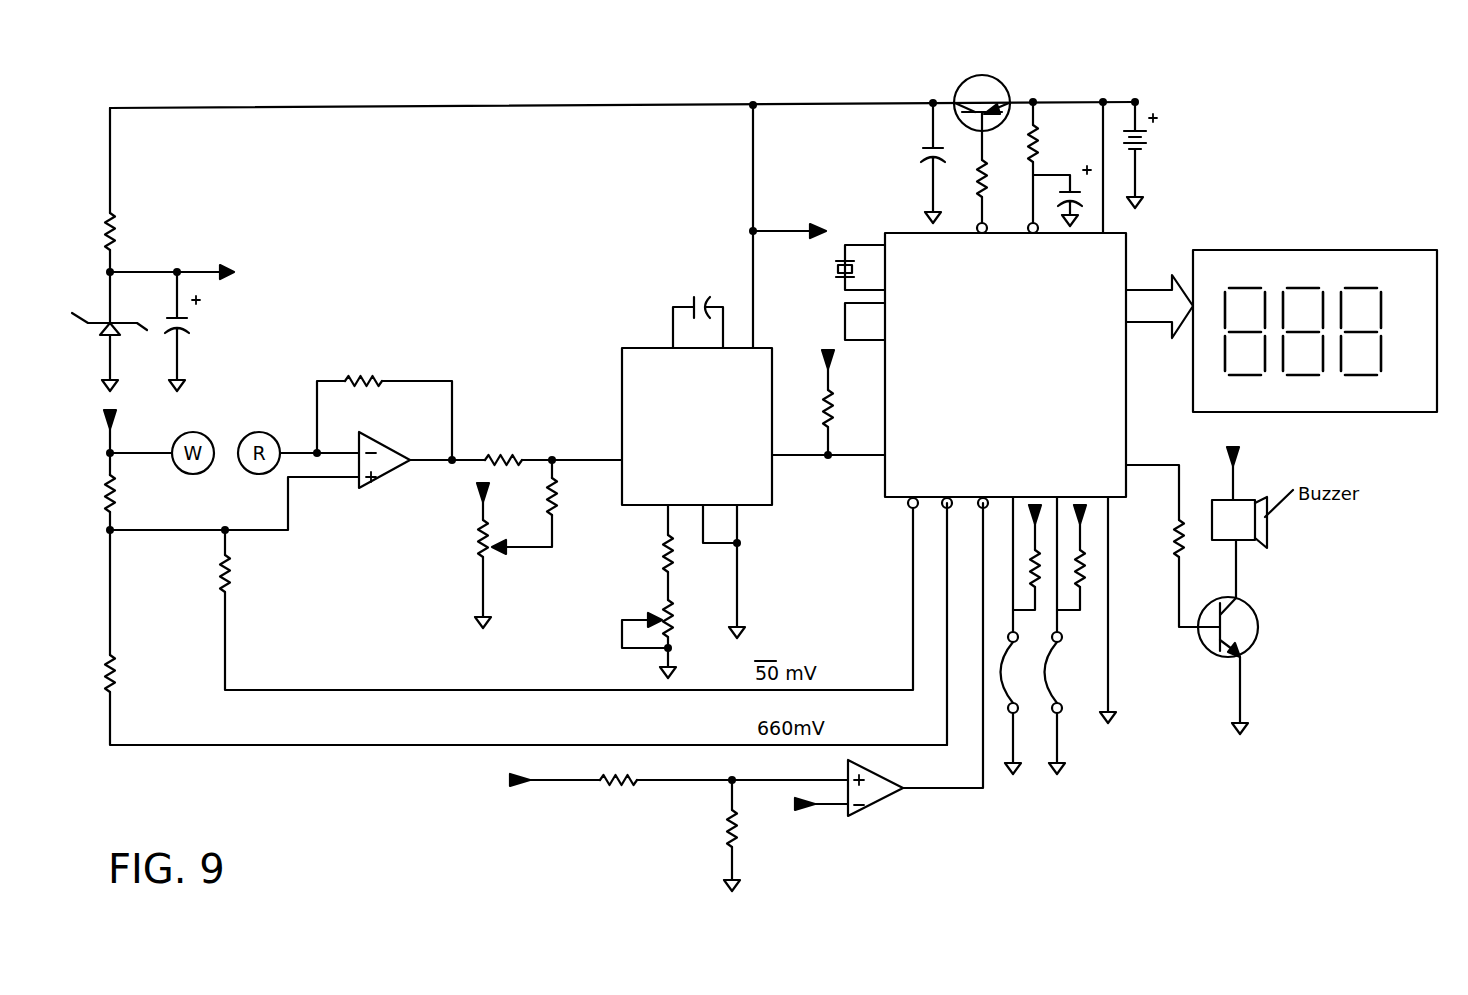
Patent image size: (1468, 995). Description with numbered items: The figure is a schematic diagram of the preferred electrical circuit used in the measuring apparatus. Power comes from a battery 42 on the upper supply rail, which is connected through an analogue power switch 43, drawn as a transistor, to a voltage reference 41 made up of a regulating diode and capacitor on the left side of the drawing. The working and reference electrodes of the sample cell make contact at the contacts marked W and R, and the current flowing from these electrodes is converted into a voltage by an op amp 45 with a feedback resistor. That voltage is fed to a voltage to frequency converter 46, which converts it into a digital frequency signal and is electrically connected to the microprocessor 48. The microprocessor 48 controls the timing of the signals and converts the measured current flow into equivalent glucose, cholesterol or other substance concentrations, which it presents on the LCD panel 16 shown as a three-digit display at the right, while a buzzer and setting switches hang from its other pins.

The LCD panel 16 is at (1385, 250).
The voltage reference 41 is at (200, 319).
The battery 42 is at (1152, 101).
The analogue power switch 43 is at (968, 85).
The op amp 45 is at (398, 472).
The voltage to frequency converter 46 is at (633, 376).
The microprocessor 48 is at (1106, 418).